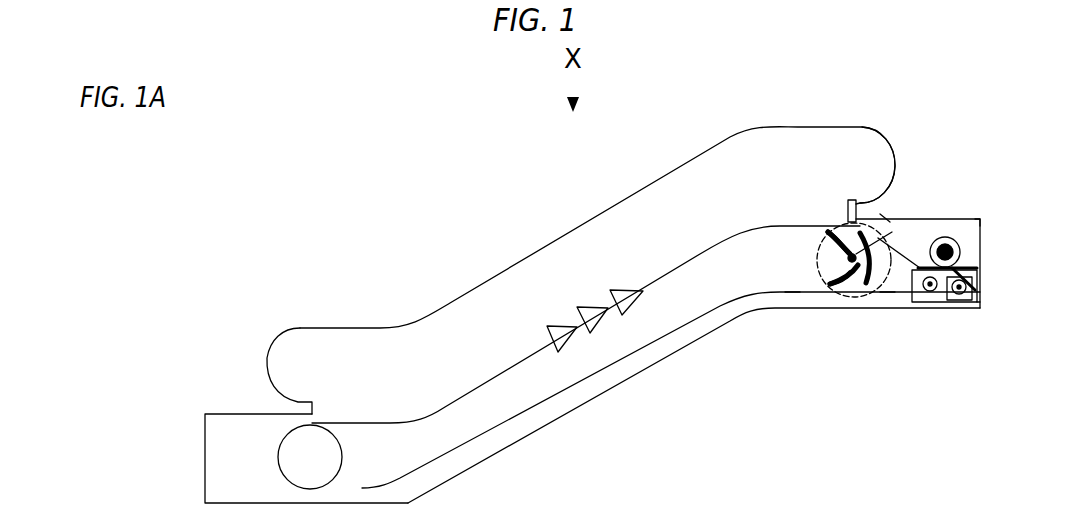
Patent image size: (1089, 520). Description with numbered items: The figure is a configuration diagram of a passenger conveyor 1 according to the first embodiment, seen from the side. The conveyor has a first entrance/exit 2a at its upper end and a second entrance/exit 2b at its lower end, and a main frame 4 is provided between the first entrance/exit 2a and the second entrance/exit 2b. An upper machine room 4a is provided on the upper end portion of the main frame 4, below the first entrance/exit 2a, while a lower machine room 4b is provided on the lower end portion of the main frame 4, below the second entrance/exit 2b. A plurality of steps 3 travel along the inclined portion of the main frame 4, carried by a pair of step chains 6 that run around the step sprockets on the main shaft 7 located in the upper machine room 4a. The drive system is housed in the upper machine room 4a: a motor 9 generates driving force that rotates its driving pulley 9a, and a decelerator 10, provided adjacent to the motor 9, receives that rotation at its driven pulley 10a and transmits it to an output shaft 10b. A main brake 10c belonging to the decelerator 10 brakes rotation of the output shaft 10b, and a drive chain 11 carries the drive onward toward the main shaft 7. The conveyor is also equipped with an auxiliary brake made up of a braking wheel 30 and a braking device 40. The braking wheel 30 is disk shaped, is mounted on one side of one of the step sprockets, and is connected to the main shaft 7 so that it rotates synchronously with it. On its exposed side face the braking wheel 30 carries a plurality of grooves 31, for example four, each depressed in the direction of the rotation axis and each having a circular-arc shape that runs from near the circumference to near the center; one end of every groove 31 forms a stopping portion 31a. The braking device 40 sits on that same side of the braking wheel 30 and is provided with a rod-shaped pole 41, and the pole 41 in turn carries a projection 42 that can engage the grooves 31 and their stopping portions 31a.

The passenger conveyor 1 is at (320, 113).
The first entrance/exit 2a is at (950, 218).
The second entrance/exit 2b is at (267, 413).
The steps 3 is at (548, 326).
The main frame 4 is at (593, 398).
The upper machine room 4a is at (983, 227).
The lower machine room 4b is at (222, 443).
The step chains 6 is at (793, 293).
The main shaft 7 is at (823, 228).
The motor 9 is at (963, 248).
The driving pulley 9a is at (975, 268).
The decelerator 10 is at (937, 305).
The driven pulley 10a is at (983, 310).
The output shaft 10b is at (927, 286).
The main brake 10c is at (960, 304).
The drive chain 11 is at (887, 293).
The braking wheel 30 is at (860, 297).
The grooves 31 is at (843, 290).
The stopping portion 31a is at (827, 293).
The braking device 40 is at (851, 200).
The pole 41 is at (857, 205).
The projection 42 is at (892, 218).